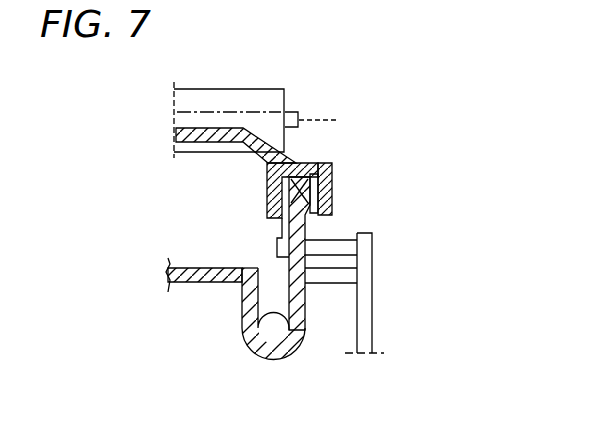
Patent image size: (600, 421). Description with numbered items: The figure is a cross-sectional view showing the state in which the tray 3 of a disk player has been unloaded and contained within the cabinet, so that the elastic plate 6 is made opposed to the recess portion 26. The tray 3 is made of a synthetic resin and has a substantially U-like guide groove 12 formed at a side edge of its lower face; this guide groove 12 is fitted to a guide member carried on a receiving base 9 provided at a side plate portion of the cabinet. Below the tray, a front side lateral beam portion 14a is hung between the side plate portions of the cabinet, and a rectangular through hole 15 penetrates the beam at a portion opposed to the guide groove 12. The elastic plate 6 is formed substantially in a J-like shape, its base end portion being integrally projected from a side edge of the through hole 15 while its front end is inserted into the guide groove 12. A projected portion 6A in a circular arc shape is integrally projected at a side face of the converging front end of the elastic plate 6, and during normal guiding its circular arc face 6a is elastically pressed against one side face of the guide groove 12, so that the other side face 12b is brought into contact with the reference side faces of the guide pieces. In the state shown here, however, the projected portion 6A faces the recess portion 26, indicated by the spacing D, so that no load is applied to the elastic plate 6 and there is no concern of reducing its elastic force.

The tray 3 is at (176, 133).
The dimension / distance D is at (318, 120).
The elastic plate 6 is at (242, 337).
The projected portion 6A is at (267, 197).
The circular arc face 6a is at (332, 188).
The receiving base 9 is at (350, 248).
The guide groove 12 is at (295, 235).
The other side face 12b is at (279, 229).
The front side lateral beam portion 14a is at (170, 272).
The through hole 15 is at (332, 284).
The recess portion 26 is at (318, 216).